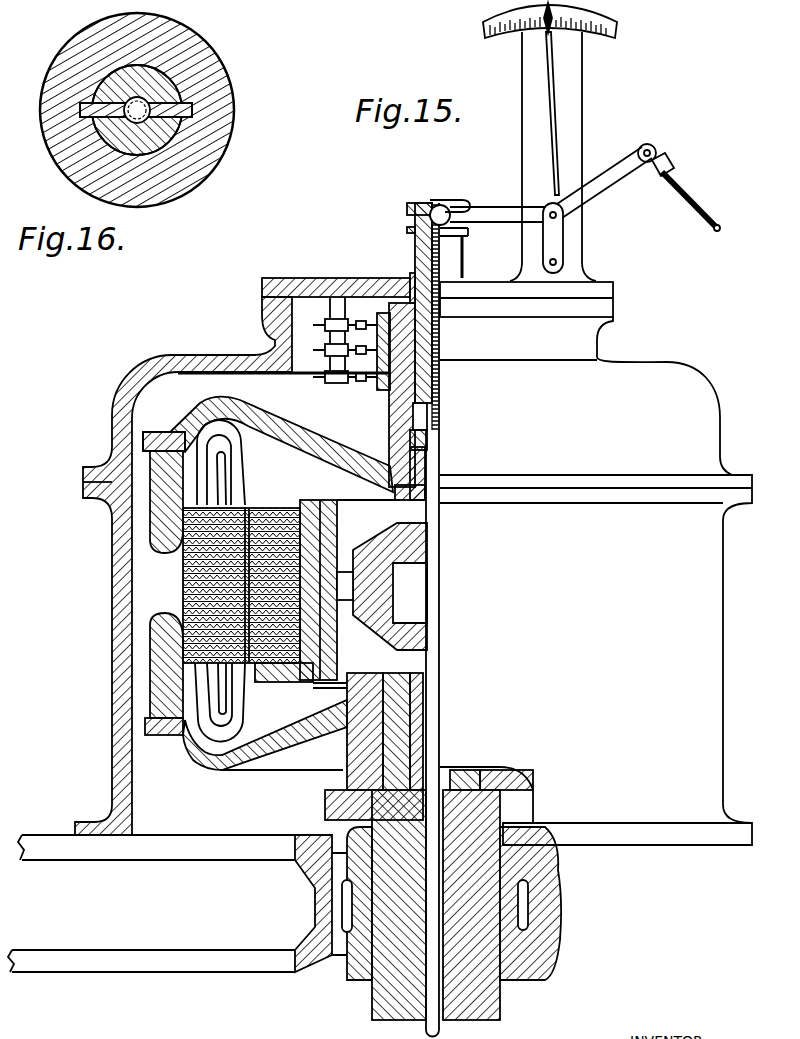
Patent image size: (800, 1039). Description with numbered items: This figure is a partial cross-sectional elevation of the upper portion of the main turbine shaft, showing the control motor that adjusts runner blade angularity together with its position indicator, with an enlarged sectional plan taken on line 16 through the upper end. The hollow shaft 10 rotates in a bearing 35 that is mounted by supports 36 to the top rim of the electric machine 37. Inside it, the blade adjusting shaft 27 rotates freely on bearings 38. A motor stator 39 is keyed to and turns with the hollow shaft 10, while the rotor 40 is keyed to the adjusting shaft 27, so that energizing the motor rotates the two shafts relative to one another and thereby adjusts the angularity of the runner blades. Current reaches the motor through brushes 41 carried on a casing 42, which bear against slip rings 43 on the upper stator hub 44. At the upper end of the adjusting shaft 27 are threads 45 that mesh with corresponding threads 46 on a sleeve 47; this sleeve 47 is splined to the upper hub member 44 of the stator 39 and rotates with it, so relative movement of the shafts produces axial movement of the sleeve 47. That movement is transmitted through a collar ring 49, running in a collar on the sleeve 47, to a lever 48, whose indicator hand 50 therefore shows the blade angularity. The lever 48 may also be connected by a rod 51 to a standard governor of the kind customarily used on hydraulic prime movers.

In FIG. 15, the hollow shaft 10 is at (483, 1012).
In FIG. 15, the section line 16— 16 is at (440, 337).
In FIG. 16, the blade adjusting shaft 27 is at (218, 68).
In FIG. 15, the blade adjusting shaft 27 is at (440, 990).
In FIG. 15, the bearing 35 is at (350, 975).
In FIG. 15, the supports 36 is at (150, 955).
In FIG. 15, the electric machine 37 is at (111, 665).
In FIG. 15, the bearings 38 is at (393, 657).
In FIG. 15, the stator 39 is at (182, 756).
In FIG. 15, the rotor 40 is at (320, 513).
In FIG. 15, the brushes 41 is at (326, 374).
In FIG. 15, the casing 42 is at (312, 278).
In FIG. 15, the slip rings 43 is at (364, 352).
In FIG. 16, the upper stator hub 44 is at (222, 131).
In FIG. 15, the upper stator hub 44 is at (393, 392).
In FIG. 15, the threads 45 is at (440, 252).
In FIG. 15, the threads 46 is at (413, 220).
In FIG. 16, the sleeve 47 is at (200, 44).
In FIG. 15, the sleeve 47 is at (420, 200).
In FIG. 15, the lever 48 is at (500, 212).
In FIG. 15, the collar ring 49 is at (470, 182).
In FIG. 15, the indicator hand 50 is at (553, 113).
In FIG. 15, the rod 51 is at (695, 196).